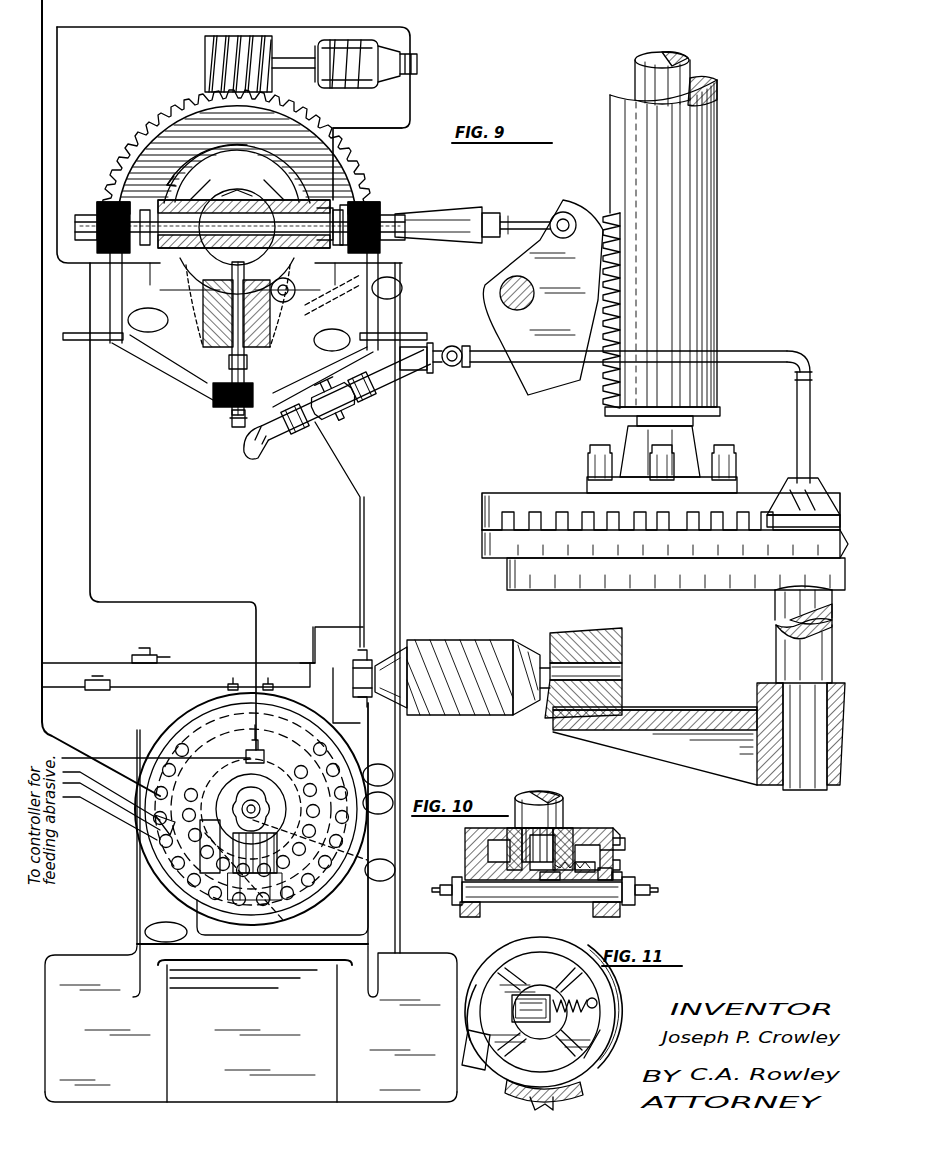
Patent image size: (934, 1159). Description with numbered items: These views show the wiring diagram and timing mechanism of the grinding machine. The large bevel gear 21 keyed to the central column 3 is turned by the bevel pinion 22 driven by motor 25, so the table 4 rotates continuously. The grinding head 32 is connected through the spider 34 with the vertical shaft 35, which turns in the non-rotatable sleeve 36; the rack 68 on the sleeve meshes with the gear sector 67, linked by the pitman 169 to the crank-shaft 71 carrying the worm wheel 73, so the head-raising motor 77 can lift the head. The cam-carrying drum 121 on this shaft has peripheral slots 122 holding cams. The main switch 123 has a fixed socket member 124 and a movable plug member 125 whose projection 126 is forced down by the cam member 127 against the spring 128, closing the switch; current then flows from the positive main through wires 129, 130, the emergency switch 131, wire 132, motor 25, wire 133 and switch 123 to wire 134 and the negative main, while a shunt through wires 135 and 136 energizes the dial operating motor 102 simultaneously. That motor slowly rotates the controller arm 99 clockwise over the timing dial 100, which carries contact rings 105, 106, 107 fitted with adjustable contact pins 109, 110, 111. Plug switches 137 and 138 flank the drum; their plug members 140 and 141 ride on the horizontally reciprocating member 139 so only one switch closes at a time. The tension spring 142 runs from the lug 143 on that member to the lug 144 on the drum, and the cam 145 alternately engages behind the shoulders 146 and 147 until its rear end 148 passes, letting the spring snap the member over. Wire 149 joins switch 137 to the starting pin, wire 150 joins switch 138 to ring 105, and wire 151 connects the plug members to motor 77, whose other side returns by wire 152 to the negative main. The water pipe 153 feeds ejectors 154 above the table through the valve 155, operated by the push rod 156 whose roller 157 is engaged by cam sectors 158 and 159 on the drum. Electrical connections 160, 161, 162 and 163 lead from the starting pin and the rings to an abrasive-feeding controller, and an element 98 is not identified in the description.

In FIG. 9, the central column 3 is at (807, 773).
In FIG. 9, the table 4 is at (483, 547).
In FIG. 9, the large bevel gear 21 is at (703, 740).
In FIG. 9, the bevel pinion 22 is at (593, 660).
In FIG. 9, the motor 25 is at (468, 627).
In FIG. 9, the grinding head 32 is at (573, 500).
In FIG. 9, the spider 34 is at (684, 440).
In FIG. 9, the vertical shaft 35 is at (667, 95).
In FIG. 9, the sleeve 36 is at (707, 178).
In FIG. 9, the gear sector 67 is at (522, 325).
In FIG. 9, the rack 68 is at (608, 382).
In FIG. 10, the crank-shaft 71 is at (548, 817).
In FIG. 9, the worm wheel 73 is at (148, 143).
In FIG. 9, the motor 77 is at (358, 45).
In FIG. 9, the valve 98 is at (262, 753).
In FIG. 9, the controller arm 99 is at (250, 873).
In FIG. 9, the timing dial 100 is at (335, 748).
In FIG. 9, the electric motor 102 is at (222, 708).
In FIG. 9, the contact ring 105 is at (381, 870).
In FIG. 9, the contact ring 106 is at (379, 803).
In FIG. 9, the contact ring 107 is at (379, 775).
In FIG. 9, the contact pins 109 is at (215, 860).
In FIG. 9, the contact pins 110 is at (280, 836).
In FIG. 9, the contact pins 111 is at (313, 879).
In FIG. 9, the cam-carrying drum 121 is at (287, 186).
In FIG. 10, the cam-carrying drum 121 is at (590, 847).
In FIG. 11, the cam-carrying drum 121 is at (540, 940).
In FIG. 10, the slots 122 is at (607, 845).
In FIG. 9, the main switch 123 is at (222, 407).
In FIG. 9, the fixed socket member 124 is at (230, 375).
In FIG. 9, the plug member 125 is at (222, 338).
In FIG. 9, the cam or projection 126 is at (182, 319).
In FIG. 11, the cam or projection 126 is at (530, 1100).
In FIG. 11, the cam member 127 is at (577, 1090).
In FIG. 9, the spring 128 is at (246, 364).
In FIG. 9, the wire 129 is at (44, 400).
In FIG. 9, the wire 130 is at (100, 662).
In FIG. 9, the emergency switch 131 is at (148, 650).
In FIG. 9, the wire 132 is at (310, 662).
In FIG. 9, the wire 133 is at (357, 514).
In FIG. 9, the wire 134 is at (58, 107).
In FIG. 9, the wire 135 is at (147, 690).
In FIG. 9, the wire 136 is at (337, 627).
In FIG. 9, the plug switch 137 is at (100, 213).
In FIG. 9, the plug switch 138 is at (380, 207).
In FIG. 9, the horizontally reciprocating member 139 is at (228, 212).
In FIG. 10, the horizontally reciprocating member 139 is at (547, 895).
In FIG. 11, the horizontally reciprocating member 139 is at (527, 1000).
In FIG. 9, the plug member 140 is at (155, 221).
In FIG. 10, the plug member 140 is at (440, 889).
In FIG. 9, the plug member 141 is at (346, 212).
In FIG. 10, the plug member 141 is at (650, 889).
In FIG. 10, the tension spring 142 is at (562, 860).
In FIG. 11, the tension spring 142 is at (582, 1007).
In FIG. 10, the lug 143 is at (540, 877).
In FIG. 10, the lug 144 is at (592, 867).
In FIG. 11, the lug 144 is at (594, 998).
In FIG. 11, the cam 145 is at (597, 1047).
In FIG. 10, the shoulder 146 is at (614, 879).
In FIG. 10, the shoulder 147 is at (465, 880).
In FIG. 11, the rear end 148 is at (467, 1020).
In FIG. 9, the wire 149 is at (91, 478).
In FIG. 9, the wire 150 is at (399, 495).
In FIG. 9, the wire 151 is at (408, 112).
In FIG. 9, the wire 152 is at (232, 27).
In FIG. 9, the water pipe 153 is at (520, 358).
In FIG. 9, the ejectors 154 is at (797, 498).
In FIG. 9, the valve 155 is at (340, 412).
In FIG. 9, the push rod 156 is at (332, 340).
In FIG. 9, the roller 157 is at (318, 294).
In FIG. 11, the cam sector 158 is at (590, 1070).
In FIG. 11, the cam sector 159 is at (480, 1063).
In FIG. 9, the electrical connection 160 is at (97, 760).
In FIG. 9, the electrical connection 161 is at (123, 792).
In FIG. 9, the electrical connection 162 is at (92, 798).
In FIG. 9, the electrical connection 163 is at (118, 820).
In FIG. 9, the pitman 169 is at (440, 226).